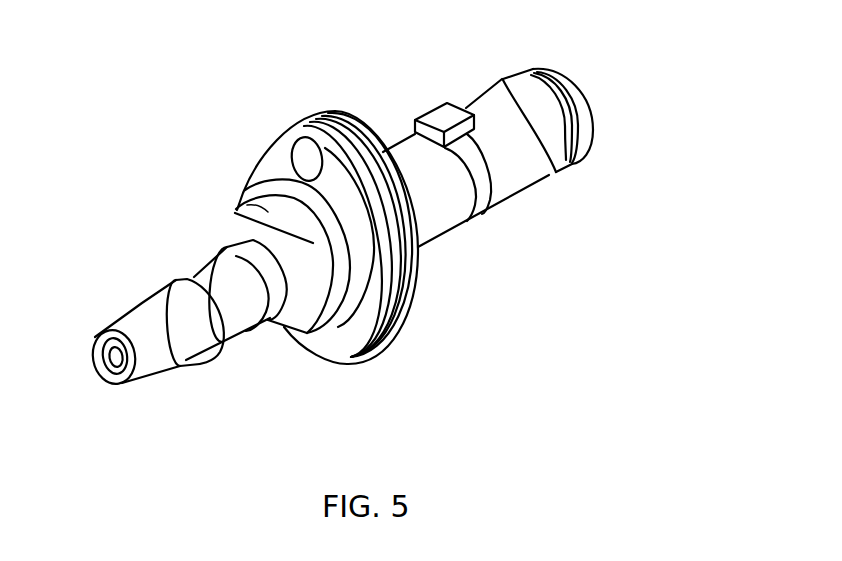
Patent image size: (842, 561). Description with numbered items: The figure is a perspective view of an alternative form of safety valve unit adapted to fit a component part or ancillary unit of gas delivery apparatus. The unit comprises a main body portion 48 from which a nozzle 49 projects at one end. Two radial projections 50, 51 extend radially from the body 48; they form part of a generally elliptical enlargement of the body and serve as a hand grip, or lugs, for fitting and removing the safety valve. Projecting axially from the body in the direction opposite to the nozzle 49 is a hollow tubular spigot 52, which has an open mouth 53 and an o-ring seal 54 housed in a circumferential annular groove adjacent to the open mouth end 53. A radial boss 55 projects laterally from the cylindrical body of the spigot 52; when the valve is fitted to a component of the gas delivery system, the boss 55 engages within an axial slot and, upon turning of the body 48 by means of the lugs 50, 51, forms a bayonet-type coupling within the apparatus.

The main body portion 48 is at (238, 201).
The nozzle 49 is at (178, 302).
The radial projection 50 is at (318, 118).
The radial projection 51 is at (345, 342).
The hollow tubular spigot 52 is at (485, 204).
The open mouth 53 is at (590, 122).
The o-ring seal 54 is at (510, 80).
The radial boss 55 is at (440, 101).